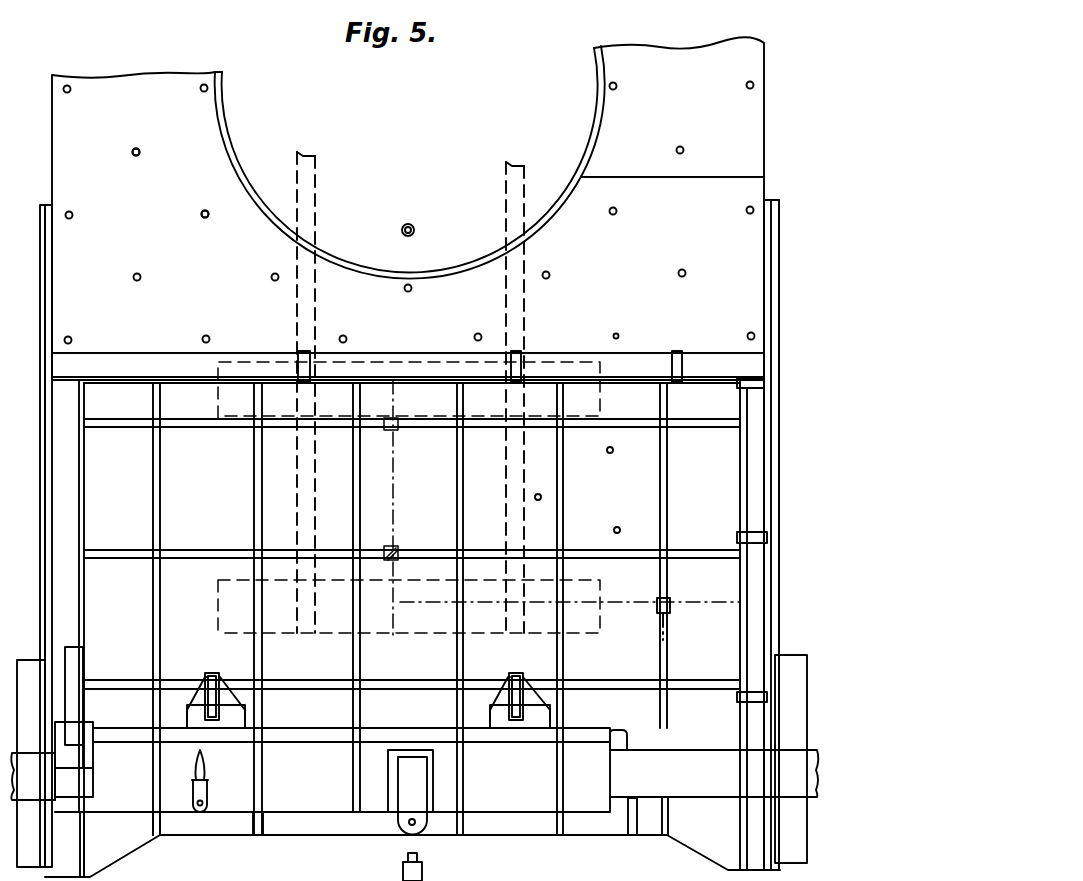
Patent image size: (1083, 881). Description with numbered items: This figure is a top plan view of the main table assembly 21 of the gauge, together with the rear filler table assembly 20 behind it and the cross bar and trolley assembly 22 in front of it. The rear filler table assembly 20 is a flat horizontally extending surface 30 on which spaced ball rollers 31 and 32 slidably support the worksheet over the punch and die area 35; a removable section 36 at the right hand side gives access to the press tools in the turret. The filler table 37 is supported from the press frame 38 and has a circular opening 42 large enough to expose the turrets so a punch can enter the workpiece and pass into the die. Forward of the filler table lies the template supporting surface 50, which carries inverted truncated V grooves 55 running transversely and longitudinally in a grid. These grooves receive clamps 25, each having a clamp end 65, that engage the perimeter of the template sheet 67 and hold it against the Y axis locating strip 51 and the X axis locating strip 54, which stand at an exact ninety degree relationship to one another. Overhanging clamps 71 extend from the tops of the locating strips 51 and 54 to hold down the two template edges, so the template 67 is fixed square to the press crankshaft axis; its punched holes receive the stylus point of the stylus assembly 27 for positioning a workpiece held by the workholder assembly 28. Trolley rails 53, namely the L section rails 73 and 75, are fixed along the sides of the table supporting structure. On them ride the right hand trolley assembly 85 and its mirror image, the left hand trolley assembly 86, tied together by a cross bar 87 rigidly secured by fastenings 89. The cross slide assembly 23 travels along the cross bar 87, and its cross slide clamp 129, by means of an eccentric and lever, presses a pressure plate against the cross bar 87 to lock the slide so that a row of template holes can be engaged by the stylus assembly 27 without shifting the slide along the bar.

The rear filler table assembly 20 is at (408, 181).
The main table assembly 21 is at (781, 471).
The cross bar and trolley assembly 22 is at (714, 751).
The cross slide assembly 23 is at (412, 799).
The clamp assembly 25 is at (397, 553).
The stylus assembly 27 is at (414, 800).
The workholder assembly 28 is at (228, 682).
The flat horizontally extending surface 30 is at (267, 212).
The ball roller 31 is at (140, 156).
The ball roller 32 is at (619, 338).
The punch and die area 35 is at (418, 184).
The removable section 36 is at (706, 62).
The filler table 37 is at (228, 229).
The press frame 38 is at (317, 198).
The circular opening 42 is at (589, 125).
The template supporting surface 50 is at (412, 536).
The Y axis locating strip 51 is at (643, 362).
The trolley rails 53 is at (42, 610).
The X axis locating strip 54 is at (751, 444).
The inverted truncated V grooves 55 is at (153, 464).
The clamp end 65 is at (107, 365).
The template sheet 67 is at (657, 600).
The overhanging clamps 71 is at (299, 358).
The trolley rail 73 is at (775, 214).
The trolley rail 75 is at (44, 215).
The right hand trolley assembly 85 is at (793, 759).
The left hand trolley assembly 86 is at (47, 757).
The cross bar 87 is at (675, 777).
The fastenings 89 is at (662, 776).
The cross slide clamp 129 is at (190, 793).